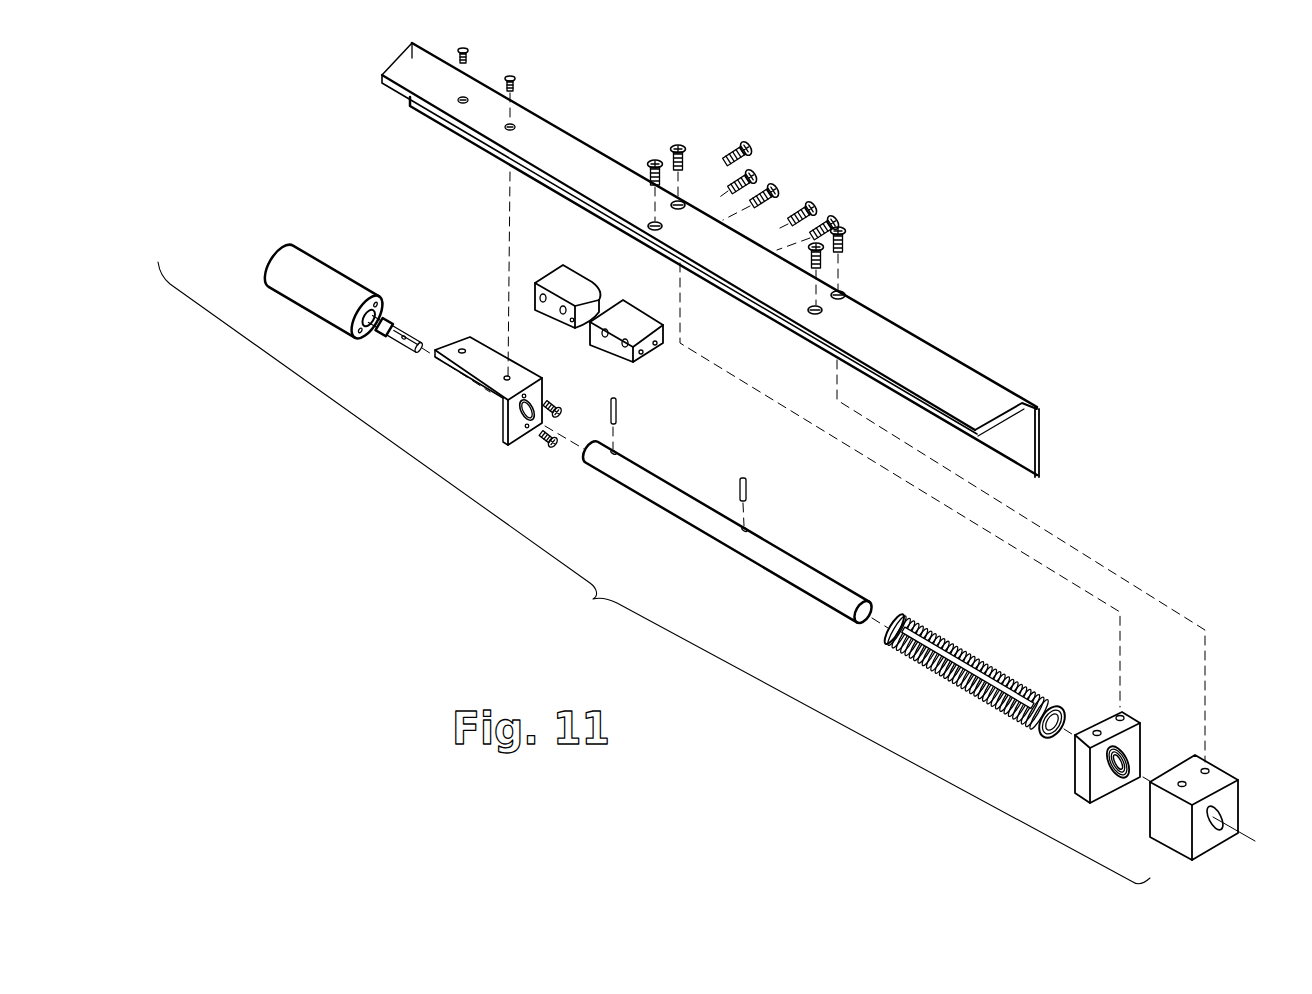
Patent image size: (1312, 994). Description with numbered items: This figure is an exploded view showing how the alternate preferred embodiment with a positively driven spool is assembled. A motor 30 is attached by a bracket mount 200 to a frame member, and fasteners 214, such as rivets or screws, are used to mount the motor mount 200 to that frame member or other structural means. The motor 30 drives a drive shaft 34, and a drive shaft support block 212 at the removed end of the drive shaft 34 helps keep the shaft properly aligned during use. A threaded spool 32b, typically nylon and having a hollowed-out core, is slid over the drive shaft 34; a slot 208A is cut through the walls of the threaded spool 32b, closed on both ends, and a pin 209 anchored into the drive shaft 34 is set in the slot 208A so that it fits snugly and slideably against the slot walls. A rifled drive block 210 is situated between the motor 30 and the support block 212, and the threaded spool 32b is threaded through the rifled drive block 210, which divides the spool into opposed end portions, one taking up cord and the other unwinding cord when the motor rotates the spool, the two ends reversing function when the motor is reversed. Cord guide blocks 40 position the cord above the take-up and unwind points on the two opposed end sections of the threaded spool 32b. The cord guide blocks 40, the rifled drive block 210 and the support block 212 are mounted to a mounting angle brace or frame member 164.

The motor 30 is at (325, 273).
The threaded spool 32b is at (975, 672).
The drive shaft 34 is at (798, 567).
The cord guide blocks 40 is at (563, 264).
The channel mounting bracket 164 is at (904, 340).
The bracket mount 200 is at (522, 376).
The slot 208A is at (951, 638).
The pin 209 is at (752, 482).
The rifled drive block 210 is at (1137, 740).
The drive shaft support block 212 is at (1238, 797).
The fasteners 214 is at (512, 68).